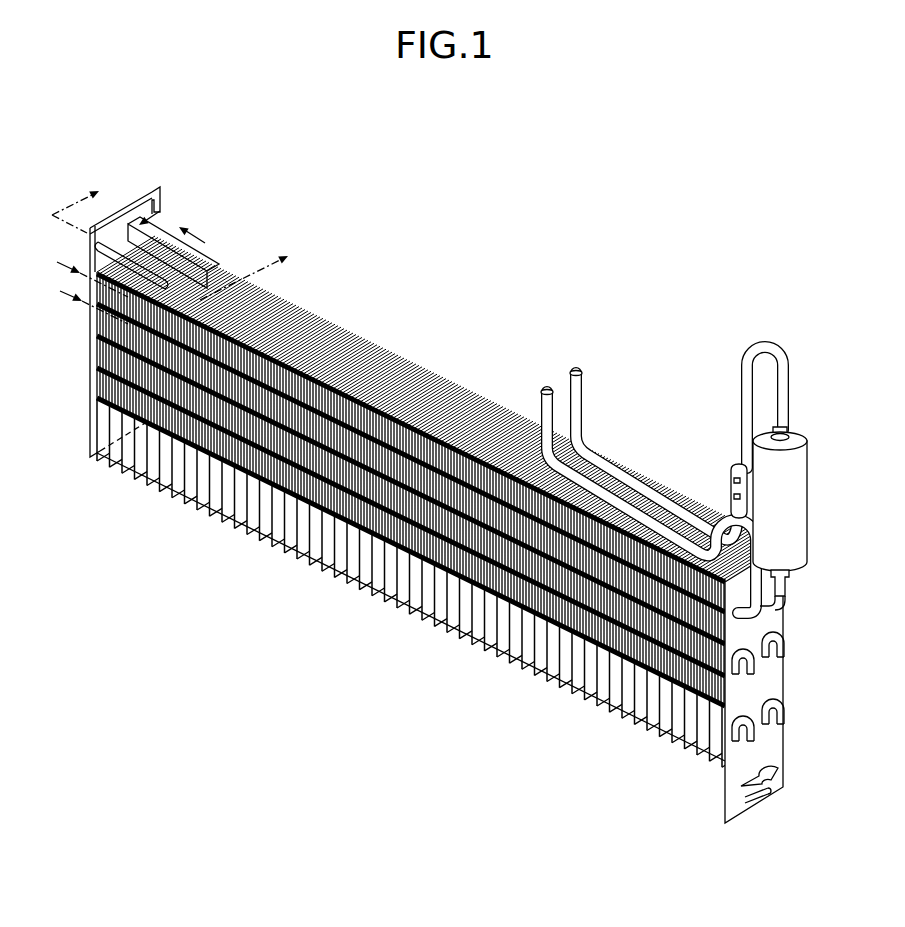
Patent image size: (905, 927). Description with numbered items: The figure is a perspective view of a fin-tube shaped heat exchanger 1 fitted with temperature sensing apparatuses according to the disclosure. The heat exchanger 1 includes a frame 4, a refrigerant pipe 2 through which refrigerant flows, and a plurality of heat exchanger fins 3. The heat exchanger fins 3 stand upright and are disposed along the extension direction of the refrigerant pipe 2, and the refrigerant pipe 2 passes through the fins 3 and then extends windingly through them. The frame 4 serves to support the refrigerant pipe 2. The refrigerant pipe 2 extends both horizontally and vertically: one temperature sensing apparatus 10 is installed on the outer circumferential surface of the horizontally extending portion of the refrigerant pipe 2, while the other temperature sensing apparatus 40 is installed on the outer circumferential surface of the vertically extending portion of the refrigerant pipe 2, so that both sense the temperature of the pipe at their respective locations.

The heat exchanger 1 is at (420, 470).
The refrigerant pipe 2 is at (208, 273).
The heat exchanger fin 3 is at (436, 374).
The frame 4 is at (151, 200).
The temperature sensing apparatus 10 is at (107, 317).
The temperature sensing apparatus 40 is at (716, 458).